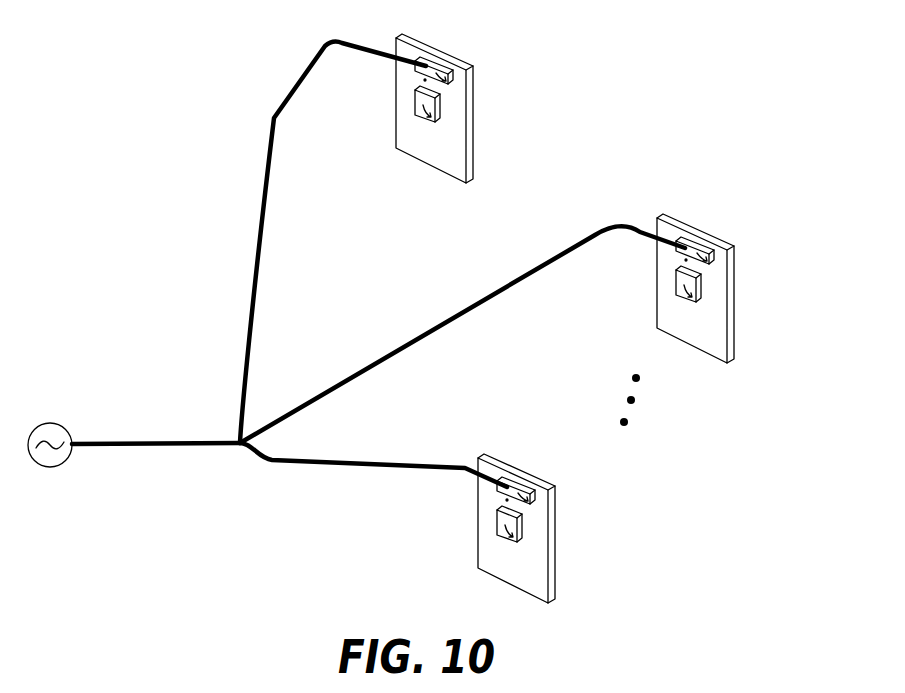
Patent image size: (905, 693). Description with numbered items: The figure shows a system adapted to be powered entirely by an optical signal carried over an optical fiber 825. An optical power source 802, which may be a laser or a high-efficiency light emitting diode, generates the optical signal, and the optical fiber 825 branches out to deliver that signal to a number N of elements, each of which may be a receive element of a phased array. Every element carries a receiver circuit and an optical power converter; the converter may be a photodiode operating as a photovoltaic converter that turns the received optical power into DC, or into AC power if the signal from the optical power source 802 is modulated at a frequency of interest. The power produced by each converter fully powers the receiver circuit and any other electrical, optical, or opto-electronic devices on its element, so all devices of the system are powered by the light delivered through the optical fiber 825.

The optical power source 802 is at (53, 422).
The optical fiber 825 is at (187, 457).